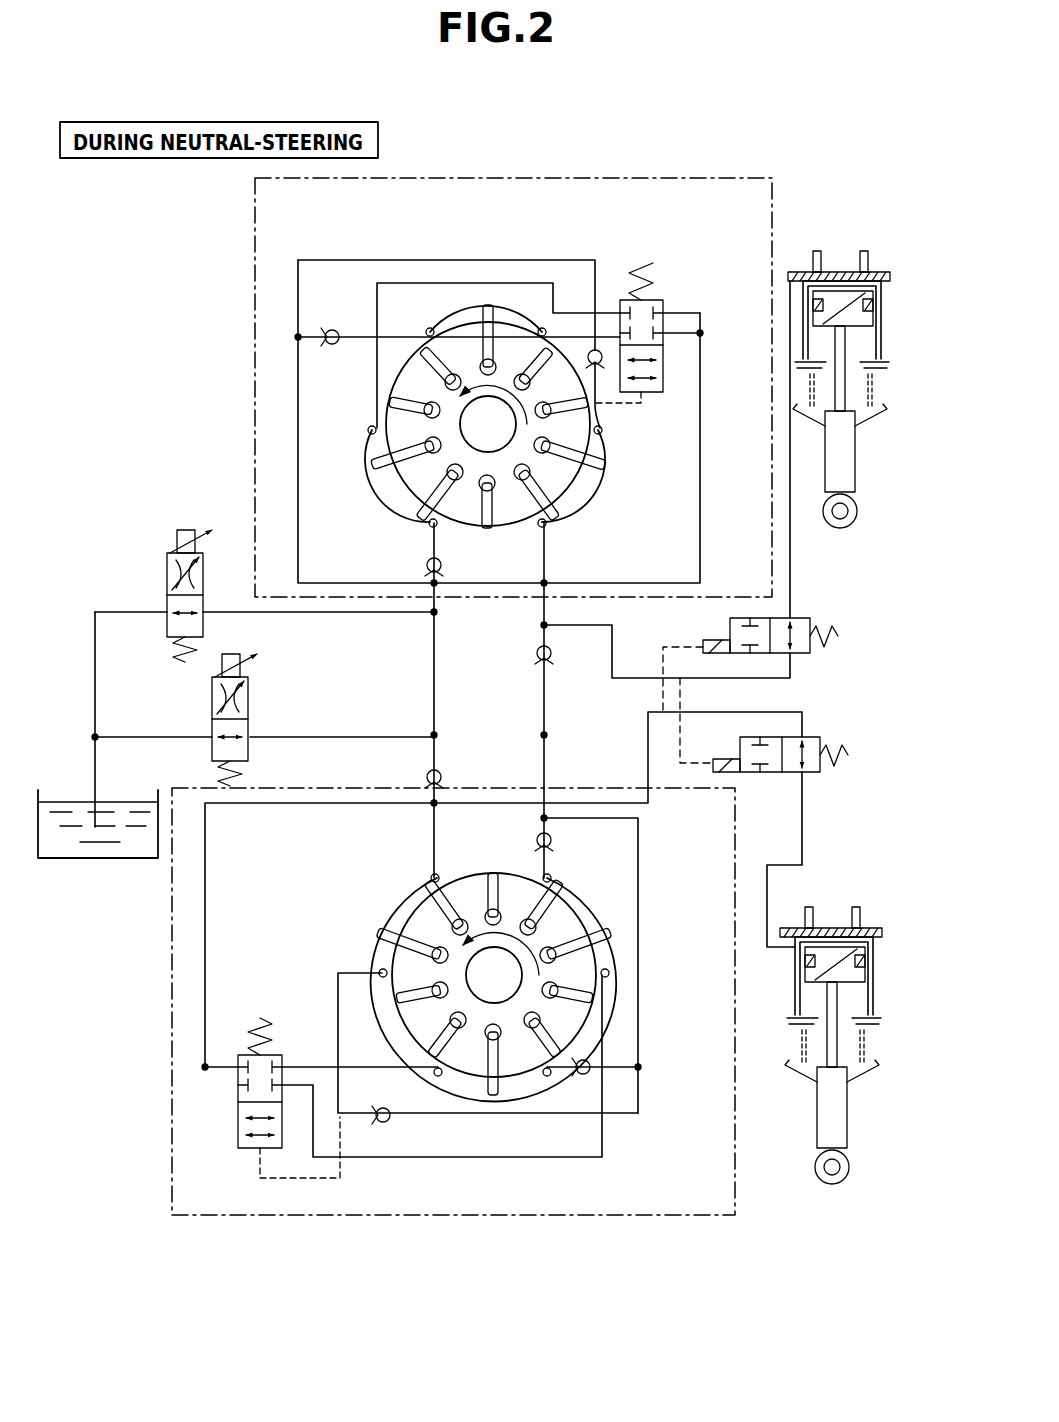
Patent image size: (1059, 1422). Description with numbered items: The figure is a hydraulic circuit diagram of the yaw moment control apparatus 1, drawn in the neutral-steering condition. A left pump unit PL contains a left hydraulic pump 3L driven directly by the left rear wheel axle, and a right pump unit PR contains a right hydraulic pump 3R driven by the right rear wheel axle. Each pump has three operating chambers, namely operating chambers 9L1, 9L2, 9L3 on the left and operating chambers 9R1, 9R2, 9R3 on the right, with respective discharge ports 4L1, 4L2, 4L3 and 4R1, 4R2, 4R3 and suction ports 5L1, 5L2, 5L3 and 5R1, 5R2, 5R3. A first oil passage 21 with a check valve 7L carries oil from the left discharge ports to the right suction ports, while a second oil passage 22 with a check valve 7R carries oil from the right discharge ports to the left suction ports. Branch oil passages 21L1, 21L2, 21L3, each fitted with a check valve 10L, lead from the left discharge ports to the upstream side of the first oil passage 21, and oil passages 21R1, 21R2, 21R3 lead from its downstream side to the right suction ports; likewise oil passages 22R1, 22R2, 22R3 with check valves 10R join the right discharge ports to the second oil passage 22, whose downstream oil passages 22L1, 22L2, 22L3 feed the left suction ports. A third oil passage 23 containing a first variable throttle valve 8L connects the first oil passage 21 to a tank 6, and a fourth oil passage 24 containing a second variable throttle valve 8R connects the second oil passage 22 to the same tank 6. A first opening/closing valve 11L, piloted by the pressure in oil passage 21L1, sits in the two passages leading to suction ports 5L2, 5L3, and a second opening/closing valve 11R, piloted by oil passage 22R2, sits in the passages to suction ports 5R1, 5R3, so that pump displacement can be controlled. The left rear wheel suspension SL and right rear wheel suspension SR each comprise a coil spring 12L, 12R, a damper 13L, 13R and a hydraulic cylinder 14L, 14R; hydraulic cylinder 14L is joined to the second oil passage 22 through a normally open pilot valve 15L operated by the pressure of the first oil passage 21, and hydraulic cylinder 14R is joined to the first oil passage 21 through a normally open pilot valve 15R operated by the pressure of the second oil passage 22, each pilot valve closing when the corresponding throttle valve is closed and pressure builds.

The yaw moment control apparatus 1 is at (135, 935).
The right hydraulic pump 3R is at (278, 430).
The left hydraulic pump 3L is at (663, 905).
The discharge port 4R1 is at (436, 526).
The discharge port 4R2 is at (603, 436).
The discharge port 4R3 is at (427, 332).
The discharge port 4L1 is at (383, 975).
The discharge port 4L2 is at (548, 1076).
The discharge port 4L3 is at (544, 876).
The suction port 5R1 is at (368, 430).
The suction port 5R2 is at (539, 528).
The suction port 5R3 is at (538, 326).
The suction port 5L1 is at (436, 876).
The suction port 5L2 is at (438, 1076).
The suction port 5L3 is at (607, 973).
The tank 6 is at (105, 860).
The check valve 7L is at (540, 650).
The check valve 7R is at (443, 773).
The second variable throttle valve 8R is at (152, 584).
The first variable throttle valve 8L is at (205, 748).
The operating chamber 9R1 is at (390, 495).
The operating chamber 9R2 is at (583, 495).
The operating chamber 9R3 is at (458, 317).
The operating chamber 9L1 is at (398, 907).
The operating chamber 9L2 is at (517, 1086).
The operating chamber 9L3 is at (585, 907).
The check valves 10R is at (340, 345).
The check valves 10L is at (540, 837).
The second opening/closing valve 11R is at (667, 266).
The first opening/closing valve 11L is at (238, 1125).
The coil spring 12R is at (873, 420).
The coil spring 12L is at (867, 1075).
The damper 13R is at (845, 482).
The damper 13L is at (835, 1137).
The hydraulic cylinder 14R is at (875, 305).
The hydraulic cylinder 14L is at (867, 961).
The pilot valve 15R is at (812, 618).
The pilot valve 15L is at (822, 737).
The first oil passage 21 is at (542, 703).
The second oil passage 22 is at (437, 668).
The third oil passage 23 is at (300, 740).
The fourth oil passage 24 is at (300, 615).
The oil passage 21R1 is at (683, 313).
The oil passage 21R2 is at (546, 550).
The oil passage 21R3 is at (700, 336).
The oil passage 21L1 is at (338, 988).
The oil passage 21L2 is at (612, 1067).
The oil passage 21L3 is at (545, 862).
The oil passage 22R1 is at (430, 542).
The oil passage 22R2 is at (598, 273).
The oil passage 22R3 is at (339, 330).
The oil passage 22L1 is at (430, 860).
The oil passage 22L2 is at (315, 1062).
The oil passage 22L3 is at (365, 1158).
The right pump unit PR is at (250, 330).
The left pump unit PL is at (578, 776).
The right rear wheel suspension SR is at (838, 245).
The left rear wheel suspension SL is at (833, 905).